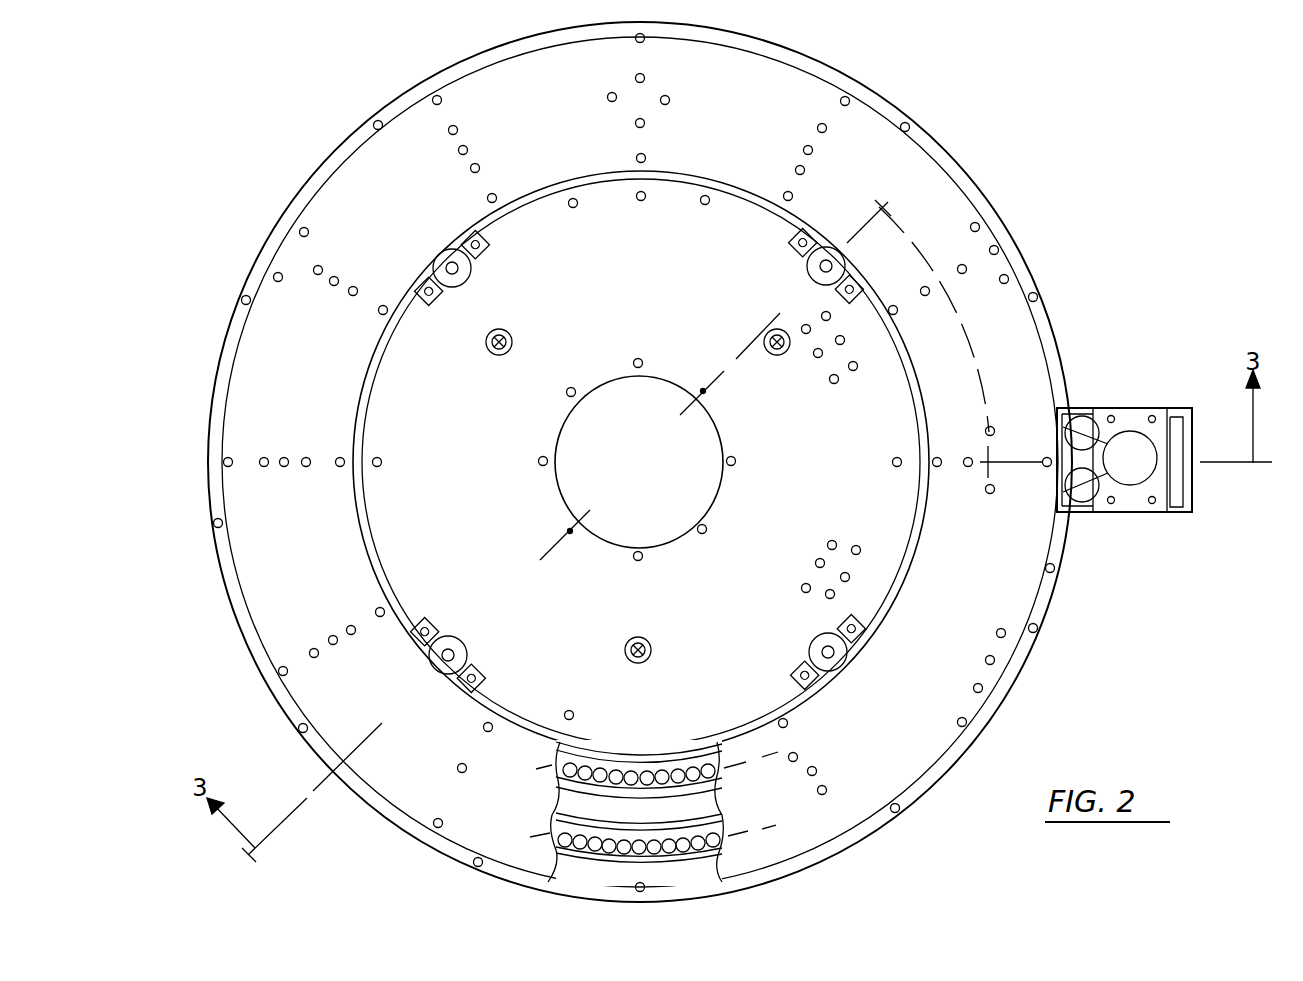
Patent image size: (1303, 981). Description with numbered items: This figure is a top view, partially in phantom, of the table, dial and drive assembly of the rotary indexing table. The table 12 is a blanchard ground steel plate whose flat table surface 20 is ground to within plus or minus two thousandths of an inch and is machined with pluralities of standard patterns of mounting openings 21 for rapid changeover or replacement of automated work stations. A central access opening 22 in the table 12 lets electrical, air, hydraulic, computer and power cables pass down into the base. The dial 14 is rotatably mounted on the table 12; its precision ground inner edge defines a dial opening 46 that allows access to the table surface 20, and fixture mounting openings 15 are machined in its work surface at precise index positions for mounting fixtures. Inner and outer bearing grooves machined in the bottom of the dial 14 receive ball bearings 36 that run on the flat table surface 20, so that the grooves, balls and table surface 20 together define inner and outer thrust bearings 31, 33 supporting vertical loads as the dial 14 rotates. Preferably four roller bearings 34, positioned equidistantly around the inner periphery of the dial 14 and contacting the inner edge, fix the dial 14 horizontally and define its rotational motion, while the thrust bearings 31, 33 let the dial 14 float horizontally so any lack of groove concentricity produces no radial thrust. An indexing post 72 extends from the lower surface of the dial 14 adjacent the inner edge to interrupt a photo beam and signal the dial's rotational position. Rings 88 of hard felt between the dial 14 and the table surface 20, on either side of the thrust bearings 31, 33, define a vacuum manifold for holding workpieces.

The table 12 is at (225, 578).
The dial 14 is at (268, 629).
The fixture mounting openings 15 is at (608, 96).
The table surface 20 is at (784, 474).
The mounting openings 21 is at (307, 229).
The access opening 22 is at (568, 515).
The inner thrust bearing 31 is at (663, 758).
The outer thrust bearing 33 is at (696, 818).
The roller bearings 34 is at (471, 270).
The ball bearings 36 is at (586, 794).
The dial opening 46 is at (368, 540).
The indexing post 72 is at (646, 156).
The rings 88 is at (607, 765).